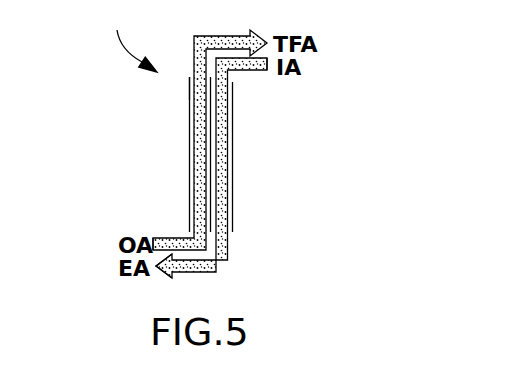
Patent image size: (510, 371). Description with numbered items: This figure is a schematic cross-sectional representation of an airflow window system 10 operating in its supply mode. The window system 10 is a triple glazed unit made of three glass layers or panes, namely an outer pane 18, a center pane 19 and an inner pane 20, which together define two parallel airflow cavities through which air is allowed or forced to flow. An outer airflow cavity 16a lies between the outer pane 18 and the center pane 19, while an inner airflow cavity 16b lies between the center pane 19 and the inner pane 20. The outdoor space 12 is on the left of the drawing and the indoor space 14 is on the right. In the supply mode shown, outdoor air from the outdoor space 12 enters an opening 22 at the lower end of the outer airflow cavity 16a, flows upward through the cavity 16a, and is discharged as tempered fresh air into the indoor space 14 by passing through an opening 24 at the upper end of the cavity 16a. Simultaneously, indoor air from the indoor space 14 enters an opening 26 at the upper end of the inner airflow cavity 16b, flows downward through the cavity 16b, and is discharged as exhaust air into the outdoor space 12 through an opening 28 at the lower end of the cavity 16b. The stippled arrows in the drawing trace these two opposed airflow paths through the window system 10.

The airflow window system 10 is at (126, 38).
The outdoor space 12 is at (76, 143).
The indoor space 14 is at (361, 168).
The outer airflow cavity 16a is at (207, 155).
The inner airflow cavity 16b is at (232, 178).
The outer pane 18 is at (190, 181).
The center pane 19 is at (213, 133).
The inner pane 20 is at (237, 90).
The opening 22 is at (190, 236).
The opening 24 is at (193, 78).
The opening 26 is at (233, 72).
The opening 28 is at (234, 233).